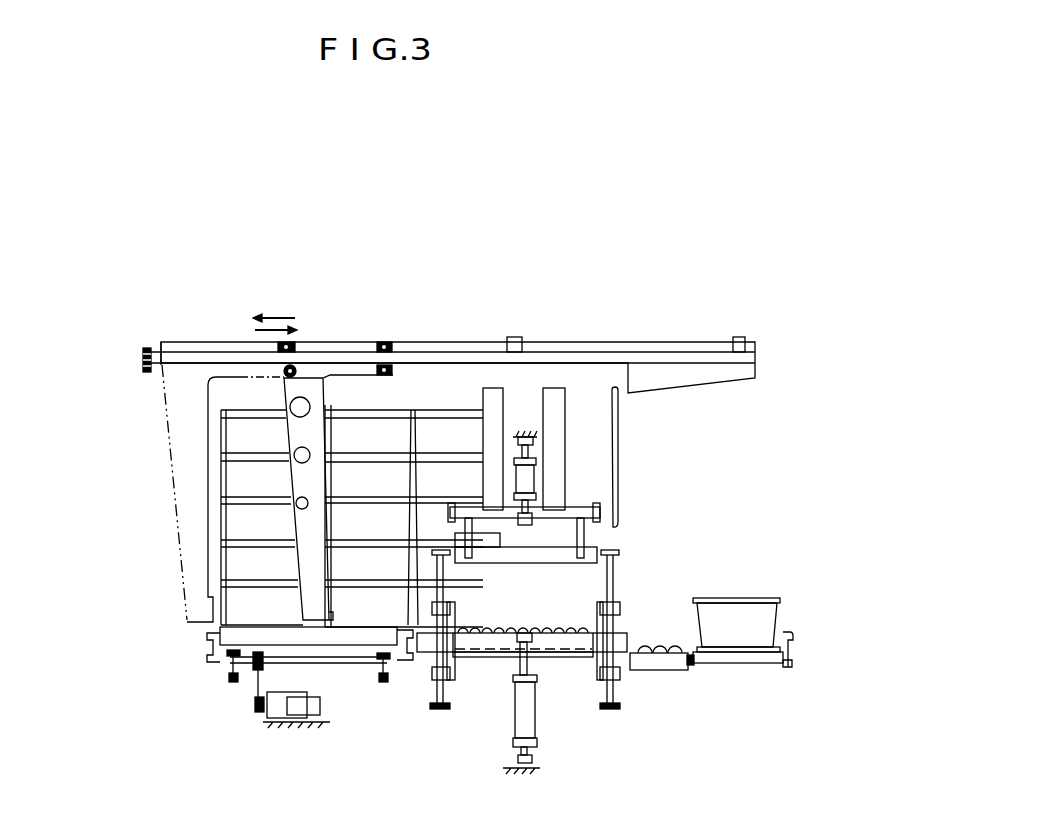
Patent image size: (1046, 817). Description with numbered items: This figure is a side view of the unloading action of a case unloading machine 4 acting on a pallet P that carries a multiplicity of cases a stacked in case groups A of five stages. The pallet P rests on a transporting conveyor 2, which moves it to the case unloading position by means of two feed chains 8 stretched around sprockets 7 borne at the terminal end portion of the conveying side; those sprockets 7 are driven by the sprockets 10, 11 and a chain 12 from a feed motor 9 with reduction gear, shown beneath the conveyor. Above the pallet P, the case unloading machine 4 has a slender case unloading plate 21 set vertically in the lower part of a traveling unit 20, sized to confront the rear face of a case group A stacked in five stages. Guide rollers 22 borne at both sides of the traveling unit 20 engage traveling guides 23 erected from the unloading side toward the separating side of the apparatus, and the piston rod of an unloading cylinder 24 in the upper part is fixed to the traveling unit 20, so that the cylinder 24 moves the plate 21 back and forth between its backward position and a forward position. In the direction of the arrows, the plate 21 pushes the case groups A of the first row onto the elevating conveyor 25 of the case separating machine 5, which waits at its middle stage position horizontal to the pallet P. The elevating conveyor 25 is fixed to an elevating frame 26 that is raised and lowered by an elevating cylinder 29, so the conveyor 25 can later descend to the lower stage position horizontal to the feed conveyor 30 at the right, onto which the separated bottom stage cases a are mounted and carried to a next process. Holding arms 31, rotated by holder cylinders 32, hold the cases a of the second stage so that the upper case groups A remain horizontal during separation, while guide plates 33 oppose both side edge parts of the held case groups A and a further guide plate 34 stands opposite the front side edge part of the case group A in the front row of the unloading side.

The transporting conveyor 2 is at (210, 667).
The case unloading machine 4 is at (252, 316).
The case separating machine 5 is at (647, 577).
The sprockets 7 is at (222, 667).
The feed chains 8 is at (231, 681).
The feed motor with reduction gear 9 is at (305, 708).
The sprocket 10 is at (260, 712).
The sprocket 11 is at (253, 671).
The chain 12 is at (260, 686).
The traveling unit 20 is at (333, 344).
The case unloading plate 21 is at (280, 473).
The guide rollers 22 is at (294, 366).
The traveling guides 23 is at (465, 352).
The unloading cylinder 24 is at (615, 343).
The elevating conveyor 25 is at (565, 657).
The elevating frame 26 is at (497, 662).
The elevating cylinder 29 is at (520, 723).
The feed conveyor 30 is at (755, 655).
The holding arms 31 is at (560, 553).
The holder cylinders 32 is at (525, 480).
The guide plates 33 is at (550, 393).
The guide plate 34 is at (618, 448).
The case group A is at (220, 430).
The case a is at (233, 603).
The pallet P is at (200, 620).